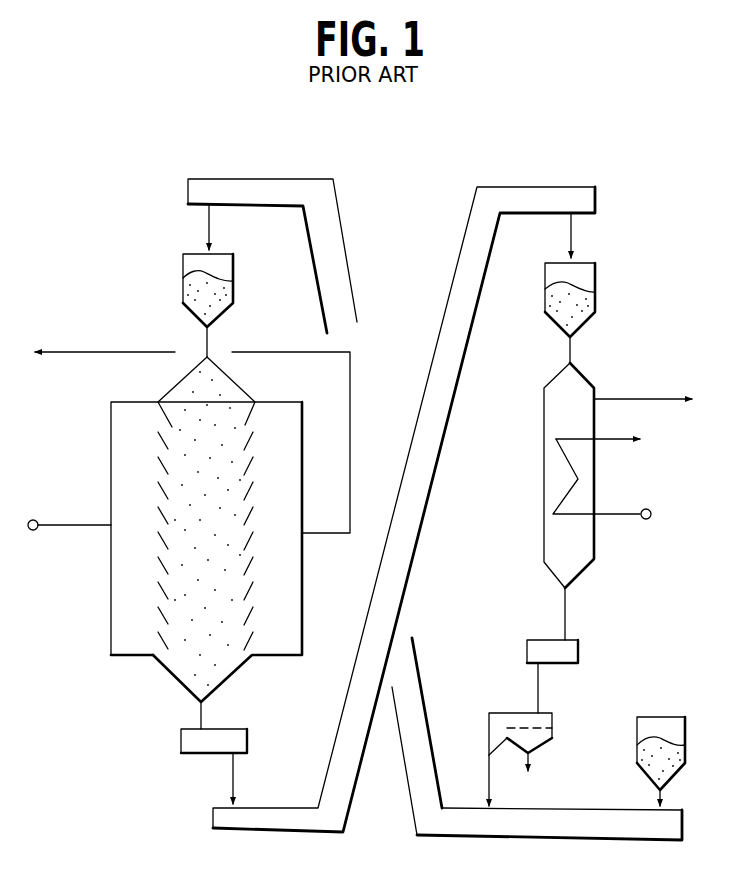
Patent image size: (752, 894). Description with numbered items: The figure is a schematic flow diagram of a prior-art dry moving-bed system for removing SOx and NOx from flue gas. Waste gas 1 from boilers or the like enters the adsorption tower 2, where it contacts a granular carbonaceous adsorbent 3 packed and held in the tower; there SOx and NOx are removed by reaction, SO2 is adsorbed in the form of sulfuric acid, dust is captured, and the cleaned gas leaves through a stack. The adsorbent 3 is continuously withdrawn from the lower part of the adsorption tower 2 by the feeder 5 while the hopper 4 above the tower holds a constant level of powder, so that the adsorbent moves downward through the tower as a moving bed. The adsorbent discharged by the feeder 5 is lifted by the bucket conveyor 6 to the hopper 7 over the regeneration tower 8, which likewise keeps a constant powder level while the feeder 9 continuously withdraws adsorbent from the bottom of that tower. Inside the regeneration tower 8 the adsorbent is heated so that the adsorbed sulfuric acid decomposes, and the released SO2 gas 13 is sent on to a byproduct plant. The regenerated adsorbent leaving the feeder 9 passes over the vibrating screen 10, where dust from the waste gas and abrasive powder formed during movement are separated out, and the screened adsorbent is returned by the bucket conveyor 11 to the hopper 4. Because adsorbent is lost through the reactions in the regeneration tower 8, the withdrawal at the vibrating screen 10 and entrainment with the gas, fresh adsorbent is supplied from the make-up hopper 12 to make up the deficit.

The waste gas 1 is at (72, 527).
The adsorption tower 2 is at (128, 657).
The granular carbonaceous adsorbent 3 is at (183, 465).
The hopper 4 is at (183, 276).
The feeder 5 is at (247, 741).
The bucket conveyor 6 is at (421, 538).
The hopper 7 is at (596, 284).
The regeneration tower 8 is at (595, 543).
The feeder 9 is at (579, 650).
The vibrating screen 10 is at (553, 726).
The bucket conveyor 11 is at (352, 258).
The make-up hopper 12 is at (660, 716).
The SO2 gas 13 is at (637, 398).